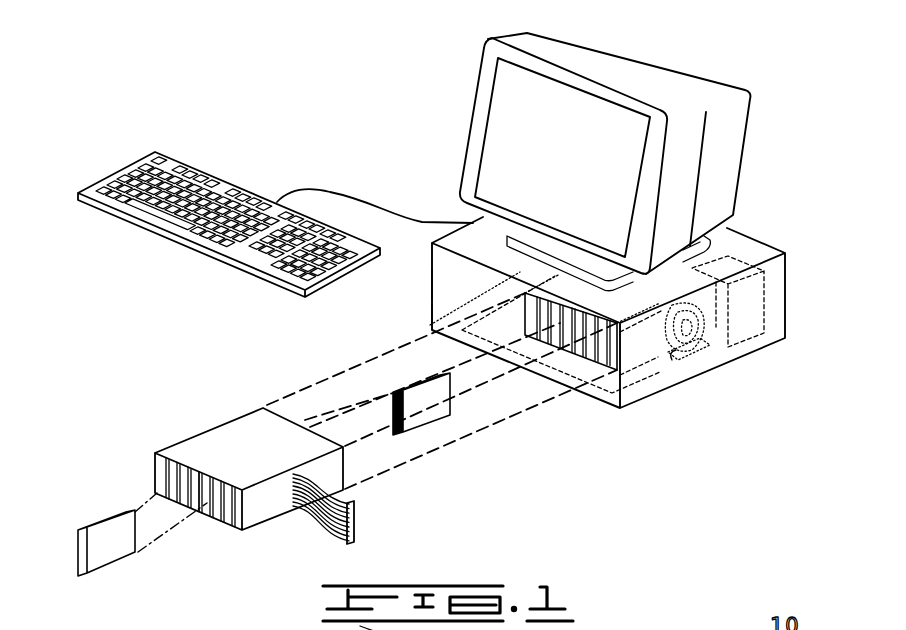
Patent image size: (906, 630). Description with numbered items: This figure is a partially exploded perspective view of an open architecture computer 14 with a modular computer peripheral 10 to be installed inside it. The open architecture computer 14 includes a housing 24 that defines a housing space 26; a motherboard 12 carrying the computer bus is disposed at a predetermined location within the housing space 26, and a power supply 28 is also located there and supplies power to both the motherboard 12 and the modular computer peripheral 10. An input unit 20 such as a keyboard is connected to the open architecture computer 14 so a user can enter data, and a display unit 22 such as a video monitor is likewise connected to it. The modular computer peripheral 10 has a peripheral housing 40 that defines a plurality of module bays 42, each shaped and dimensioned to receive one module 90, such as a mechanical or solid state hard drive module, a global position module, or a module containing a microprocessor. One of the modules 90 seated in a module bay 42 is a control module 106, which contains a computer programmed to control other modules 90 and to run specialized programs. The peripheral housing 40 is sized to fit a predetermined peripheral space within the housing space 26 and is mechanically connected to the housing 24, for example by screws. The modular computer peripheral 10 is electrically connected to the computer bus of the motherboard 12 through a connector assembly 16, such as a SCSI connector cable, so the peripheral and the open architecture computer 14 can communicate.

The modular computer peripheral 10 is at (388, 434).
The motherboard 12 is at (658, 373).
The open architecture computer 14 is at (789, 283).
The connector assembly 16 is at (333, 536).
The input unit 20 is at (198, 172).
The display unit 22 is at (678, 62).
The housing 24 is at (431, 283).
The housing space 26 is at (431, 313).
The power supply 28 is at (760, 343).
The peripheral housing 40 is at (170, 447).
The module bays 42 is at (207, 503).
The module 90 is at (83, 542).
The control module 106 is at (157, 475).